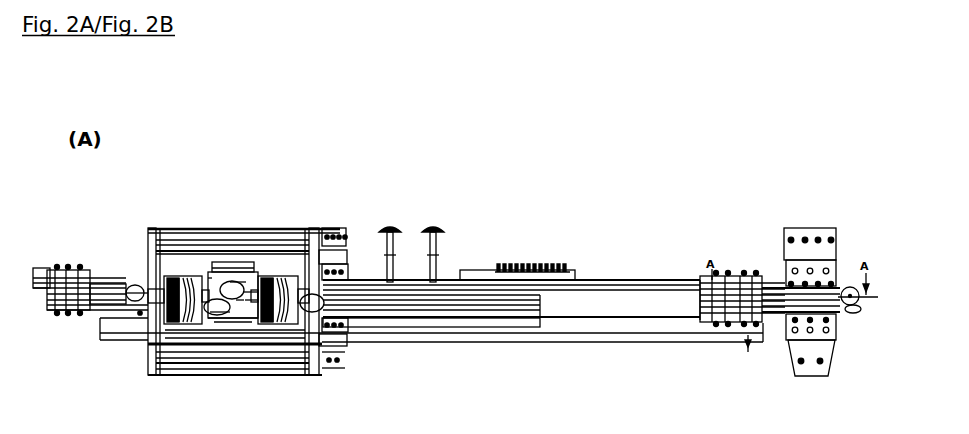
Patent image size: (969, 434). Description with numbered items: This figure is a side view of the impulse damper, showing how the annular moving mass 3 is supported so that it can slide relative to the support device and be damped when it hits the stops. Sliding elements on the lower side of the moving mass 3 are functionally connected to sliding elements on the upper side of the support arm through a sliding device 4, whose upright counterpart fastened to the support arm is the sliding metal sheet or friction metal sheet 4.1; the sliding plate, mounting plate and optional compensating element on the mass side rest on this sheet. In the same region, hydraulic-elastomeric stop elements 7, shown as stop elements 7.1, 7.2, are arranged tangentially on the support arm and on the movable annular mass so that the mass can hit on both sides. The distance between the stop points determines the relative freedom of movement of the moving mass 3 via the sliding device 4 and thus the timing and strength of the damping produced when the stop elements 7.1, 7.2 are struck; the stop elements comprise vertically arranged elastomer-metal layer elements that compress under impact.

The stop element 7 is at (284, 224).
The first drive drum 7.1 is at (184, 320).
The stop element 7.2 is at (262, 320).
The sliding device 4 is at (228, 266).
The sliding metal sheet/friction metal sheet 4.1 is at (252, 282).
The moving mass 3 is at (536, 268).